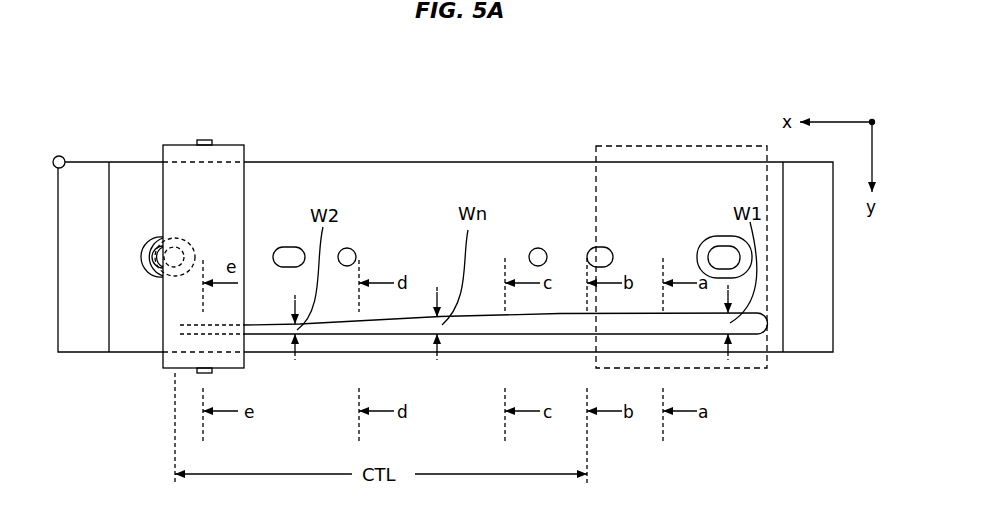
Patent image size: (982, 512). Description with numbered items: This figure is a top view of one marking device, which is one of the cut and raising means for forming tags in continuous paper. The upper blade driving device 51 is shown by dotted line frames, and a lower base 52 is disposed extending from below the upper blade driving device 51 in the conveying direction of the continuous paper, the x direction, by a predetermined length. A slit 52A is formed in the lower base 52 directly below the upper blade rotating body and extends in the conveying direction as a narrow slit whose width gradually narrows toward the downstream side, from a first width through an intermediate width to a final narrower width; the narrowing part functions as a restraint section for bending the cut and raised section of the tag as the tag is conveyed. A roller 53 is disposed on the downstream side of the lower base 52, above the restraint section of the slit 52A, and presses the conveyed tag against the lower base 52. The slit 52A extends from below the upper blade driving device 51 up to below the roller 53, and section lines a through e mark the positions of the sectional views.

The upper blade driving device 51 is at (687, 135).
The lower base 52 is at (373, 180).
The slit 52A is at (467, 323).
The roller 53 is at (243, 197).